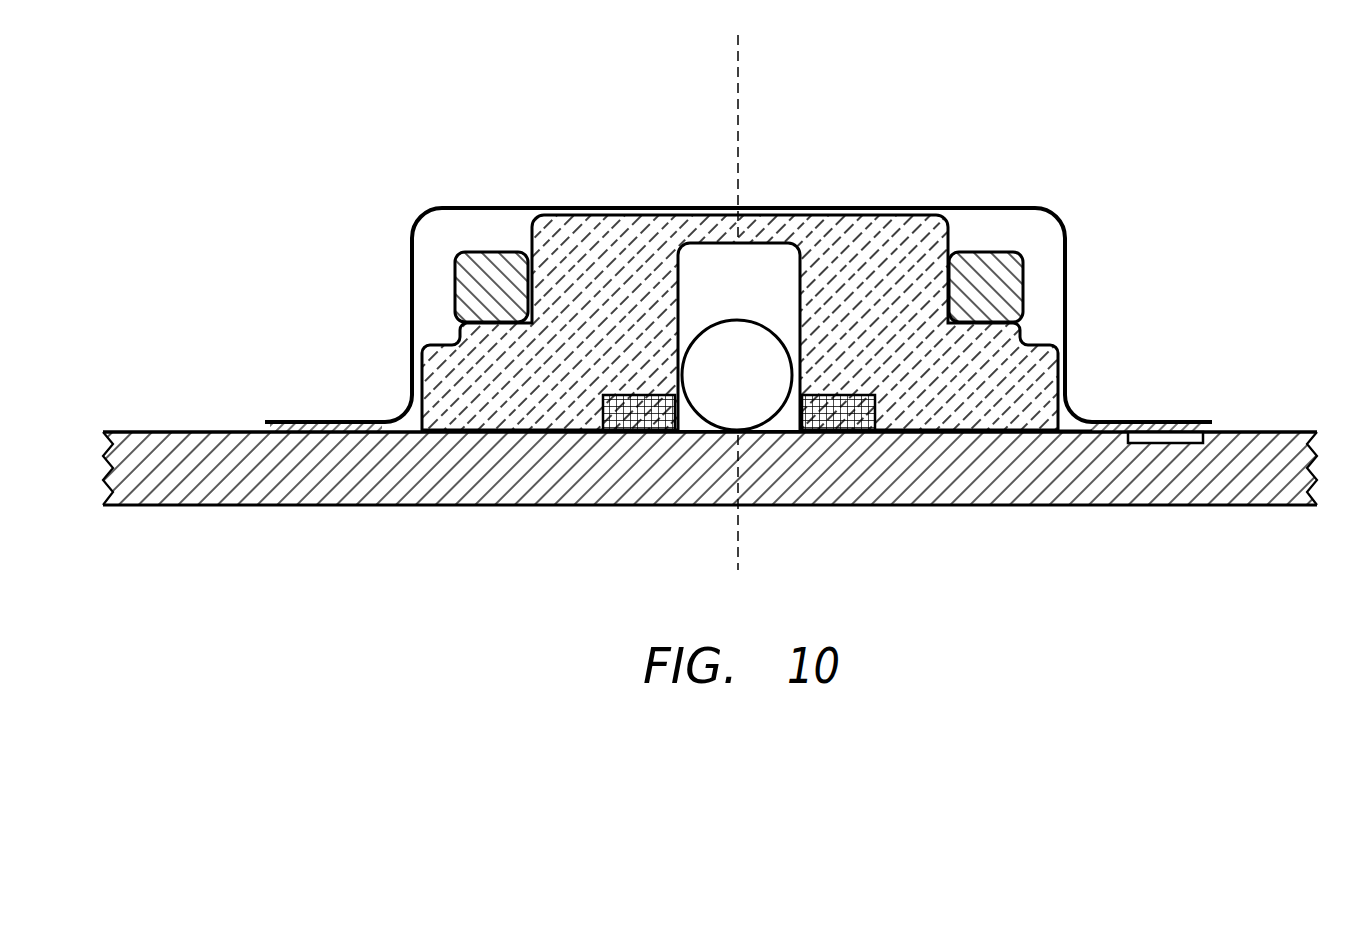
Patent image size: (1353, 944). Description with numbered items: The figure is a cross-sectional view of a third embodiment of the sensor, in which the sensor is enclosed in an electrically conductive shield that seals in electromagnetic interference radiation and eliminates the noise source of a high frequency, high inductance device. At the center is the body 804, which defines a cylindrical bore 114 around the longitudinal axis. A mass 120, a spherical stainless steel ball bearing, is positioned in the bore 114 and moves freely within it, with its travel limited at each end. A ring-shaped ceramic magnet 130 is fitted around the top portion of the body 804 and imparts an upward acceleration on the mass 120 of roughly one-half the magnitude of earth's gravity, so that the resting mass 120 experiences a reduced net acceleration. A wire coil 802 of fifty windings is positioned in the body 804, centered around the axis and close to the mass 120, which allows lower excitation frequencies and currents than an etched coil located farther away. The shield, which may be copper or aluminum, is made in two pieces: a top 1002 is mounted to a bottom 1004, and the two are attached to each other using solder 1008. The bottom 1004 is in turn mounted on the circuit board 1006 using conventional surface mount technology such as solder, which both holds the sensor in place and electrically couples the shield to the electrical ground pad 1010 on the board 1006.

The top 1002 is at (1068, 232).
The body 804 is at (893, 222).
The magnet 130 is at (492, 262).
The cylindrical bore 114 is at (768, 262).
The mass 120 is at (787, 383).
The coil 802 is at (651, 436).
The solder 1008 is at (320, 420).
The circuit board 1006 is at (1255, 447).
The bottom 1004 is at (1067, 435).
The electrical ground pad 1010 is at (1168, 440).